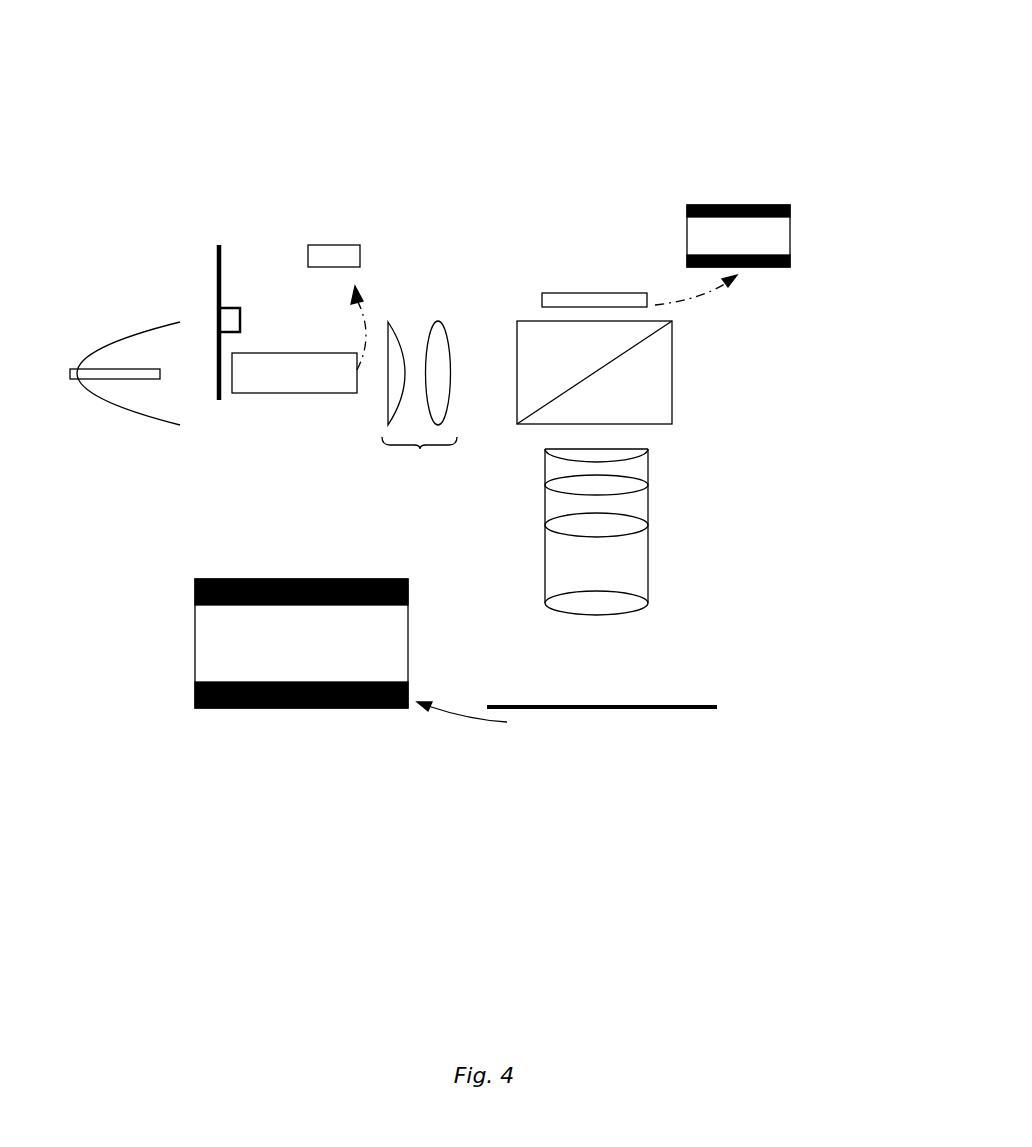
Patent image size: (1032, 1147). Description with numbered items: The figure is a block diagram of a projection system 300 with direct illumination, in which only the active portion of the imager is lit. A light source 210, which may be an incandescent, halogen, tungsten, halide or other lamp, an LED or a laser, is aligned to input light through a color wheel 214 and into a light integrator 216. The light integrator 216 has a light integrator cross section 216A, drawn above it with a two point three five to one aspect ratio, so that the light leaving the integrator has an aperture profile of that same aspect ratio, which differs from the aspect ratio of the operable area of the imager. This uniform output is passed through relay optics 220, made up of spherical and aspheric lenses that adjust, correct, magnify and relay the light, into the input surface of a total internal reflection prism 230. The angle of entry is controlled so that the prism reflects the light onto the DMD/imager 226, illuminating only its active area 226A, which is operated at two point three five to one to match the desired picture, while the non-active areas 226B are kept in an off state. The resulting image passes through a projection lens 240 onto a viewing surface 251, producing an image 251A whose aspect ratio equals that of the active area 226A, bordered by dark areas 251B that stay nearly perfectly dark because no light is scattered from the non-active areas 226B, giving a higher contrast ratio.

The projection system 300 is at (479, 382).
The light source 210 is at (132, 327).
The color wheel 214 is at (217, 270).
The light integrator 216 is at (308, 393).
The light integrator cross section 216A is at (360, 255).
The relay optics 220 is at (419, 426).
The DMD/imager 226 is at (633, 275).
The active area 226A is at (791, 235).
The non-active areas 226B is at (687, 257).
The total internal reflection prism 230 is at (673, 353).
The projection lens 240 is at (648, 520).
The viewing surface 251 is at (717, 707).
The image 251A is at (195, 640).
The dark areas 251B is at (408, 687).